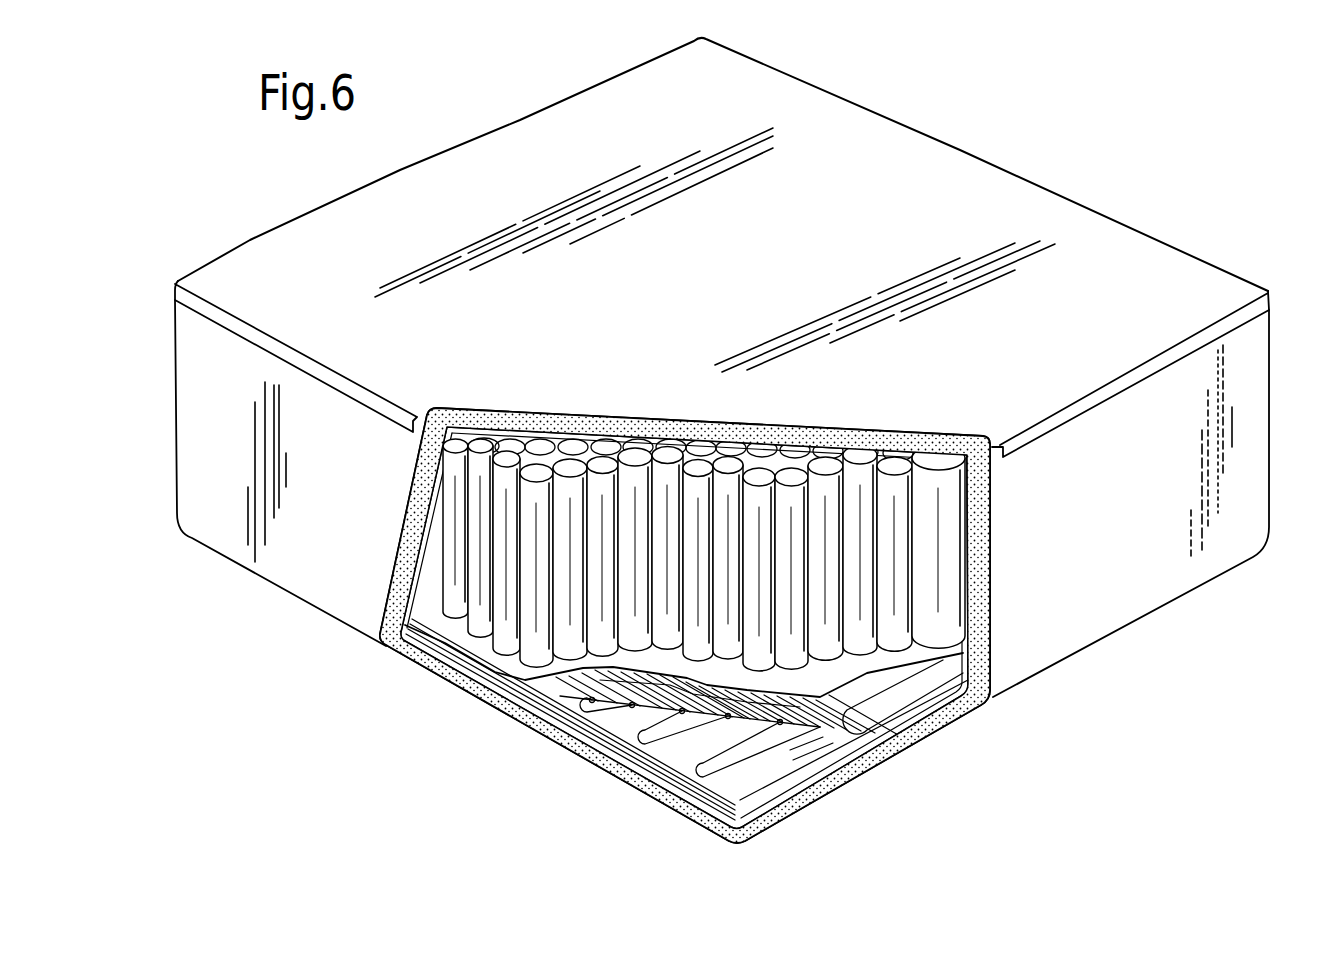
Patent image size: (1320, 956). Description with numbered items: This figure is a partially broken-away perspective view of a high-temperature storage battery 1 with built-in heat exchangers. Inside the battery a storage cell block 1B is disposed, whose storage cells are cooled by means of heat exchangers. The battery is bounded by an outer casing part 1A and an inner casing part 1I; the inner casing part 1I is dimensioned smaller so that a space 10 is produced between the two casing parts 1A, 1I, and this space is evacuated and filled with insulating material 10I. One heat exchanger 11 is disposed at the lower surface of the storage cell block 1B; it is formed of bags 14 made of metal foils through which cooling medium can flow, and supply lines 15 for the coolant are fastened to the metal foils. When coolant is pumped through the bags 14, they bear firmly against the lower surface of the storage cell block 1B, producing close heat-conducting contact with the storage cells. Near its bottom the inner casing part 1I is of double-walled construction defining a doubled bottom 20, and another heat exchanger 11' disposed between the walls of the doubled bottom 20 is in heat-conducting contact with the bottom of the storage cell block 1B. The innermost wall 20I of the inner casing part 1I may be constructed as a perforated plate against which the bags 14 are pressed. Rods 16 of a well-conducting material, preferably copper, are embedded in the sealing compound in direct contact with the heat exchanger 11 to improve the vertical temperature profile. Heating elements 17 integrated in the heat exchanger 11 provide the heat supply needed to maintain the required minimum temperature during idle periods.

The high-temperature storage battery 1 is at (853, 138).
The space 10 is at (977, 535).
The insulating material 10I is at (977, 495).
The outer casing part 1A is at (990, 575).
The inner casing part 1I is at (967, 593).
The storage cell block 1B is at (933, 610).
The rods 16 is at (830, 455).
The doubled bottom 20 is at (467, 645).
The innermost wall 20I is at (420, 658).
The bags 14 is at (553, 693).
The supply lines 15 is at (872, 715).
The heating elements 17 is at (635, 760).
The heat exchanger 11 is at (895, 730).
The heat exchanger 11' is at (925, 722).